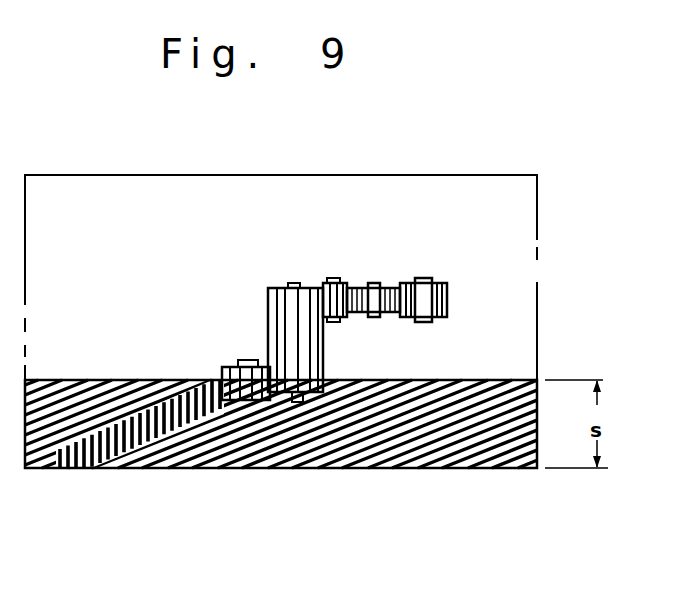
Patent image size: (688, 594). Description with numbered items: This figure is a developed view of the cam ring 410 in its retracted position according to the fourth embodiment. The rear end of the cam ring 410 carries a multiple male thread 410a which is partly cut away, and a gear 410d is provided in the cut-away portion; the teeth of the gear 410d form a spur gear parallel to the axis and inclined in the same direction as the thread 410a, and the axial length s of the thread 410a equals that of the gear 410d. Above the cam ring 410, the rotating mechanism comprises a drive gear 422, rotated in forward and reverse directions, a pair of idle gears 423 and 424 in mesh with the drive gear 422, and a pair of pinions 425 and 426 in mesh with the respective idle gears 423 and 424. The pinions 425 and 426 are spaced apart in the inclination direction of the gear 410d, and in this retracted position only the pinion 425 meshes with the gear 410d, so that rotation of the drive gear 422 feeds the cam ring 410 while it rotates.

The cam ring 410 is at (525, 277).
The multiple male thread 410a is at (423, 433).
The gear 410d is at (117, 470).
The drive gear 422 is at (322, 288).
The idle gear 423 is at (275, 288).
The idle gear 424 is at (390, 287).
The pinion 425 is at (226, 365).
The pinion 426 is at (442, 285).